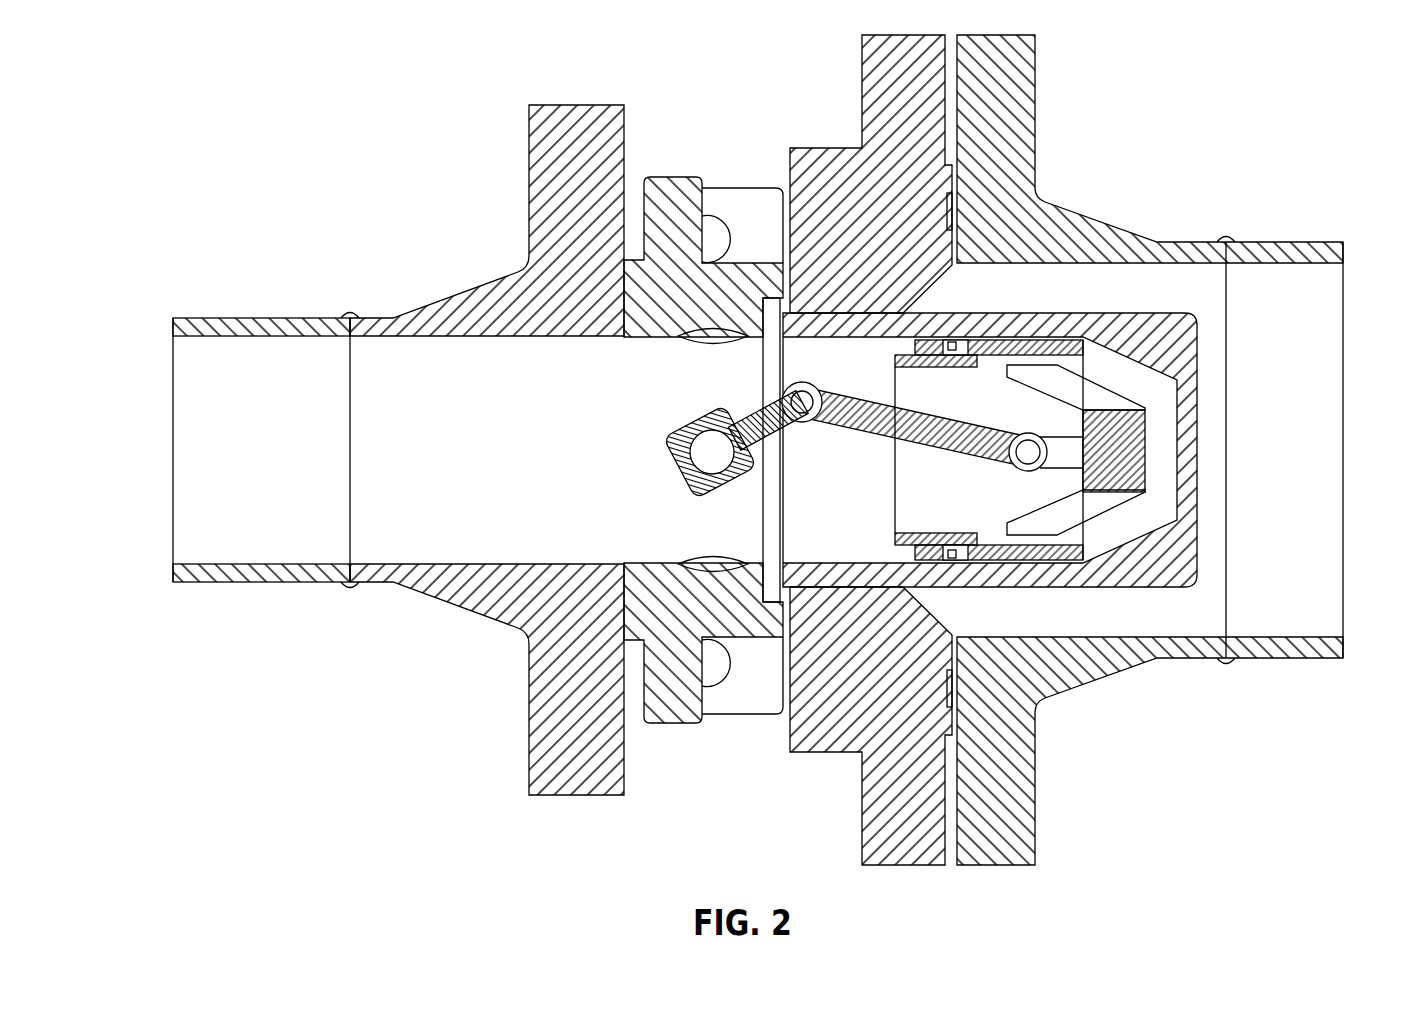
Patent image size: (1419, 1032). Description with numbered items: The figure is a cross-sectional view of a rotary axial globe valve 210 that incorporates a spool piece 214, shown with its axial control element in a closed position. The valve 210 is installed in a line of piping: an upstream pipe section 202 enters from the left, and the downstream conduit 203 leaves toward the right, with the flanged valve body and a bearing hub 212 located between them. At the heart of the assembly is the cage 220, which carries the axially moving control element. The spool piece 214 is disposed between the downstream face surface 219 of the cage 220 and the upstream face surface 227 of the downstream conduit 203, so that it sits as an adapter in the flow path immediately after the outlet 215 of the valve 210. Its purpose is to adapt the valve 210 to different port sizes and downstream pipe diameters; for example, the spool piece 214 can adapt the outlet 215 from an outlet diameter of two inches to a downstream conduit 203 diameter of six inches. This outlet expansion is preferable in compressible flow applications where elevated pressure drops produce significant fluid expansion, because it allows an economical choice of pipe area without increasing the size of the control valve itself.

The valve 210 is at (638, 55).
The inlet pipe with weld-neck flange 202 is at (430, 598).
The downstream conduit 203 is at (1103, 660).
The bearing hub 212 is at (680, 724).
The spool piece 214 is at (862, 50).
The outlet 215 is at (924, 300).
The downstream face surface 219 is at (798, 297).
The cage 220 is at (1108, 313).
The upstream face surface 227 is at (952, 183).